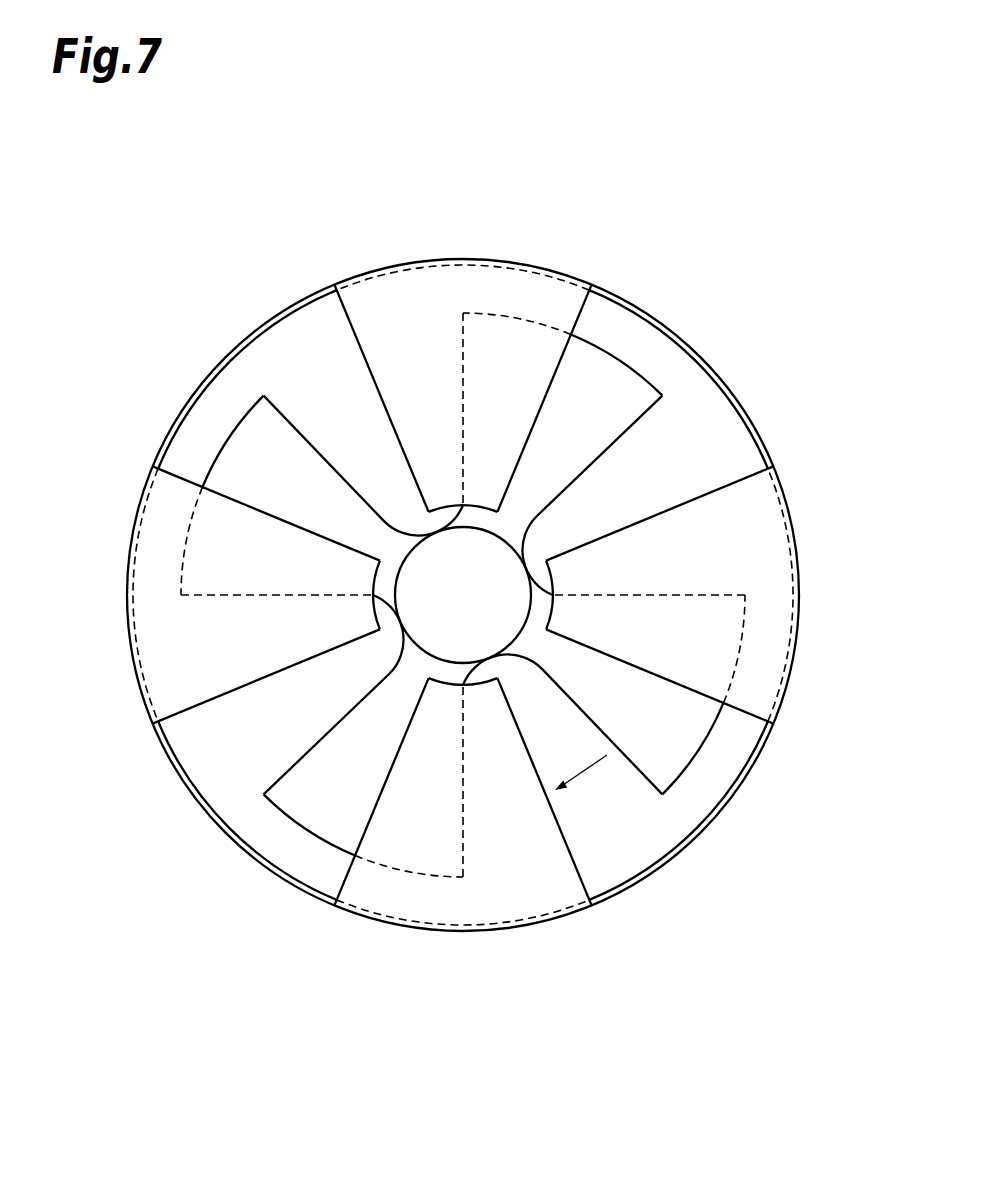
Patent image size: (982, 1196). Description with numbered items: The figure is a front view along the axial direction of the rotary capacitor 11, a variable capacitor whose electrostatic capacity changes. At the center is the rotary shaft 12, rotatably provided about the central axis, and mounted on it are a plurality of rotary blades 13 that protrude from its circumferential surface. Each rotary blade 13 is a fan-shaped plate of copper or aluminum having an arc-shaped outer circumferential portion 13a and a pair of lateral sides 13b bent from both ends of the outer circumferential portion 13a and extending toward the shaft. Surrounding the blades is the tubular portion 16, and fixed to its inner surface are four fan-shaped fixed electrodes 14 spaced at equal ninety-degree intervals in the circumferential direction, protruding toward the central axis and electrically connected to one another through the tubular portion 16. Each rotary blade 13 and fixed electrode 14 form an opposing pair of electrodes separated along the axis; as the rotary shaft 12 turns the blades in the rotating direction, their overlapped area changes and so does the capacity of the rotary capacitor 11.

The rotary capacitor 11 is at (302, 150).
The rotary shaft 12 is at (478, 623).
The rotary blade 13 is at (447, 599).
The outer circumferential portion 13a is at (205, 456).
The lateral side 13b is at (297, 415).
The fixed electrode 14 is at (413, 352).
The tubular portion 16 is at (691, 840).